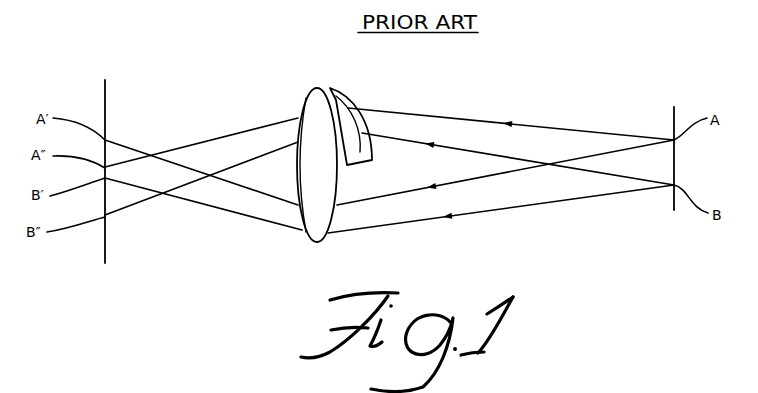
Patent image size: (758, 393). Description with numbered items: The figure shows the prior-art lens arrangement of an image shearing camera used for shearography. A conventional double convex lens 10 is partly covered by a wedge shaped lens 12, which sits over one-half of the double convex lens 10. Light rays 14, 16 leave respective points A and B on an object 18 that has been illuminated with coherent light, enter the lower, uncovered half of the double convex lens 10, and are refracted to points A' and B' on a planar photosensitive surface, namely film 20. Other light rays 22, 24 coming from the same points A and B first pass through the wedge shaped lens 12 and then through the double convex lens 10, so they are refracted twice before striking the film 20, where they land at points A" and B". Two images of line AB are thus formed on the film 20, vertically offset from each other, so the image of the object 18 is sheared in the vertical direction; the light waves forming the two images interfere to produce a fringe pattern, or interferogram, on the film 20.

The double convex lens 10 is at (313, 228).
The wedge shaped lens 12 is at (362, 150).
The light ray 14 is at (493, 176).
The light ray 16 is at (478, 213).
The object 18 is at (674, 210).
The film 20 is at (103, 254).
The light ray 22 is at (578, 128).
The light ray 24 is at (463, 152).